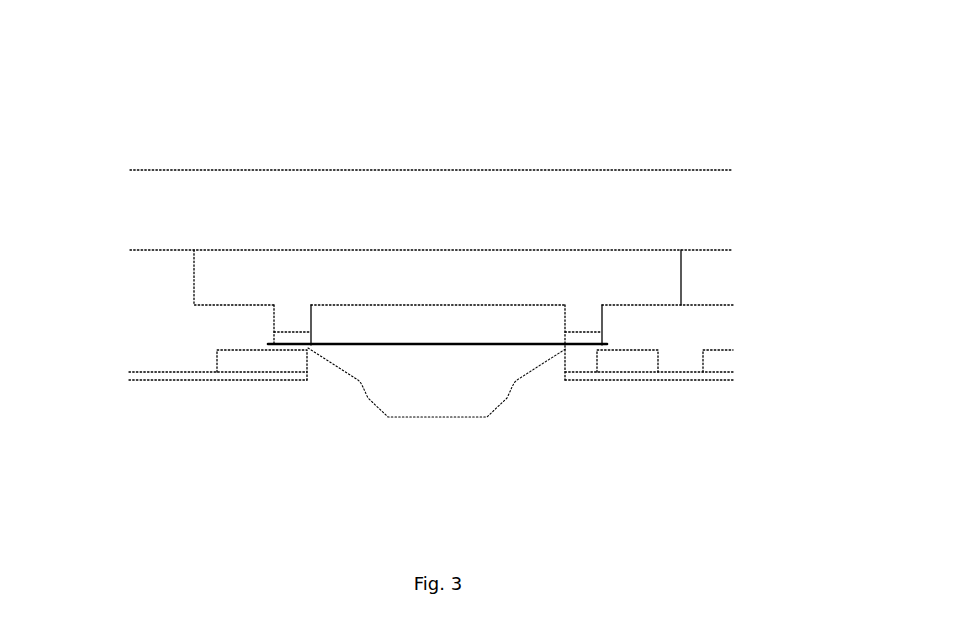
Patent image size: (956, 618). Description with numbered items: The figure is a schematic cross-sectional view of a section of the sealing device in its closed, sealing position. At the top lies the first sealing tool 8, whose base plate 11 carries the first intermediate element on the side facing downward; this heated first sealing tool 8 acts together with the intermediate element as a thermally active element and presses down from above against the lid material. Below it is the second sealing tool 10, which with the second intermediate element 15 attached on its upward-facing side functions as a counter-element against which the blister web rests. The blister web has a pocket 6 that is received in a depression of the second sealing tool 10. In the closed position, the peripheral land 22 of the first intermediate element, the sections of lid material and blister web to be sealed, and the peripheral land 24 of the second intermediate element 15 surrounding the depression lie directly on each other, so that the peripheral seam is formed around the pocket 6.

The first sealing tool 8 is at (216, 130).
The base plate 11 is at (528, 198).
The peripheral land 22 is at (285, 338).
The peripheral land 24 is at (293, 345).
The second intermediate element 15 is at (242, 362).
The second sealing tool 10 is at (722, 415).
The pocket 6 is at (450, 418).